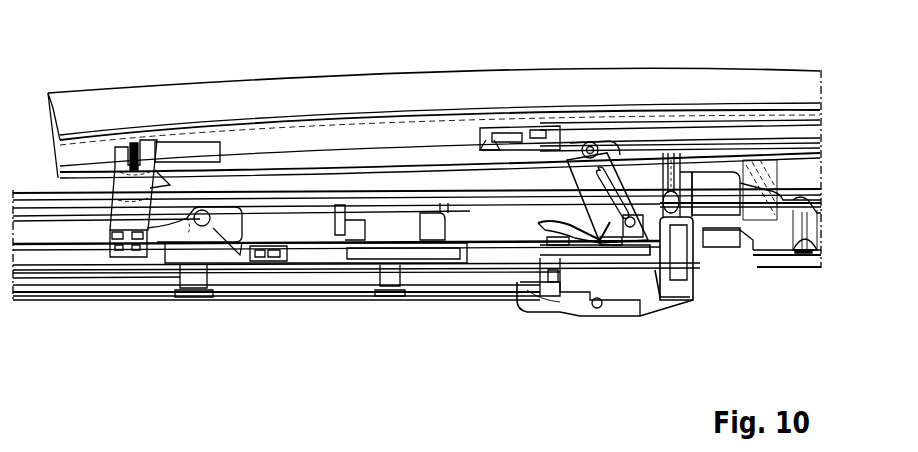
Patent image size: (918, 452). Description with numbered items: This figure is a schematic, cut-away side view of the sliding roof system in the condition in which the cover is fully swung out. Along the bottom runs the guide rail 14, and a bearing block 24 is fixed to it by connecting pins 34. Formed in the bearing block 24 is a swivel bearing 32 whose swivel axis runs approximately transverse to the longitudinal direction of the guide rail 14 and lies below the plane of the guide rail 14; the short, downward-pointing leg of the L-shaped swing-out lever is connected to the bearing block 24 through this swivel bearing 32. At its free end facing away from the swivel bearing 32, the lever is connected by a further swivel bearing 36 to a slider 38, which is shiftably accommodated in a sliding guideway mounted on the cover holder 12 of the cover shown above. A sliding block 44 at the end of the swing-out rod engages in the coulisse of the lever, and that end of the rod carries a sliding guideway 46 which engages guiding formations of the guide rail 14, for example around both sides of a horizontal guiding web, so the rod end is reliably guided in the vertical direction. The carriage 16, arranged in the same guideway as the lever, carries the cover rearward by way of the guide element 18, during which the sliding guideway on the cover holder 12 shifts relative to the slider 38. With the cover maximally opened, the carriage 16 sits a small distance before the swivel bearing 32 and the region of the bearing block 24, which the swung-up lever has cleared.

The cover holder 12 is at (258, 135).
The guide rail 14 is at (38, 233).
The carriage 16 is at (305, 256).
The guide element 18 is at (128, 222).
The bearing block 24 is at (580, 312).
The swivel bearing 32 is at (597, 309).
The connecting pins 34 is at (625, 300).
The swivel bearing 36 is at (600, 146).
The slider 38 is at (517, 130).
The sliding block 44 is at (662, 250).
The sliding guideway 46 is at (662, 296).